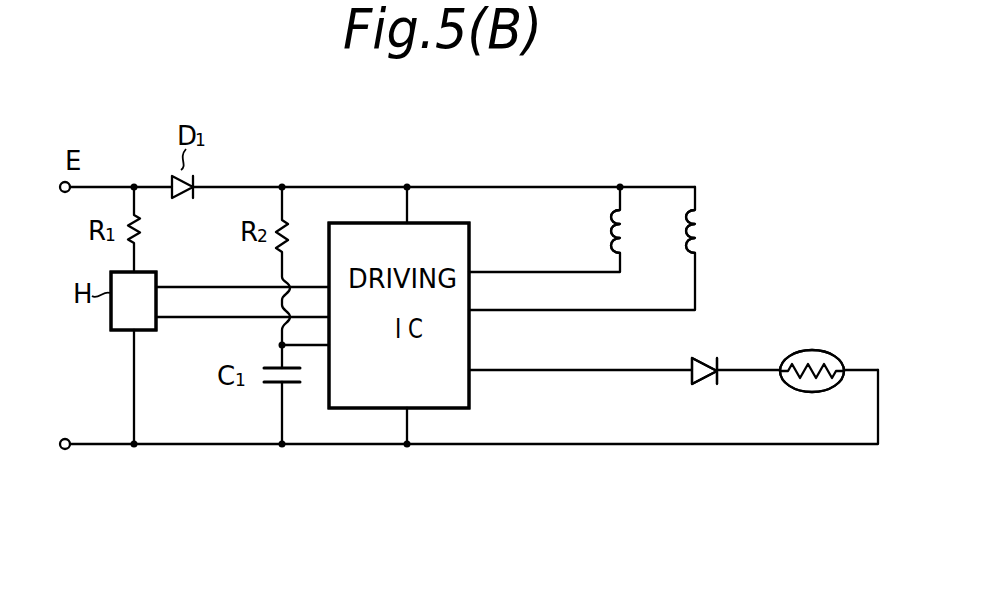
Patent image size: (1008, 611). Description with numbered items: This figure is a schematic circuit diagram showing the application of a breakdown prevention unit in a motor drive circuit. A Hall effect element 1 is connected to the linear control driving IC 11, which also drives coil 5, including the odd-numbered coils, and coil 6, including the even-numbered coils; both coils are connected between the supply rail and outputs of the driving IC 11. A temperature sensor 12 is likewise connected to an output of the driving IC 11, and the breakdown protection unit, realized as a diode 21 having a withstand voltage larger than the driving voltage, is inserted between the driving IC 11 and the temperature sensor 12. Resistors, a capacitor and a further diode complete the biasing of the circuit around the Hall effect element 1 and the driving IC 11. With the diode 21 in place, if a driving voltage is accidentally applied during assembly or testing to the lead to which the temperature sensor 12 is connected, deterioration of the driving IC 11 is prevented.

The Hall effect element 1 is at (148, 271).
The coil 5 is at (627, 244).
The coil 6 is at (700, 246).
The linear control driving IC 11 is at (470, 256).
The temperature sensor 12 is at (804, 351).
The diode 21 is at (706, 356).